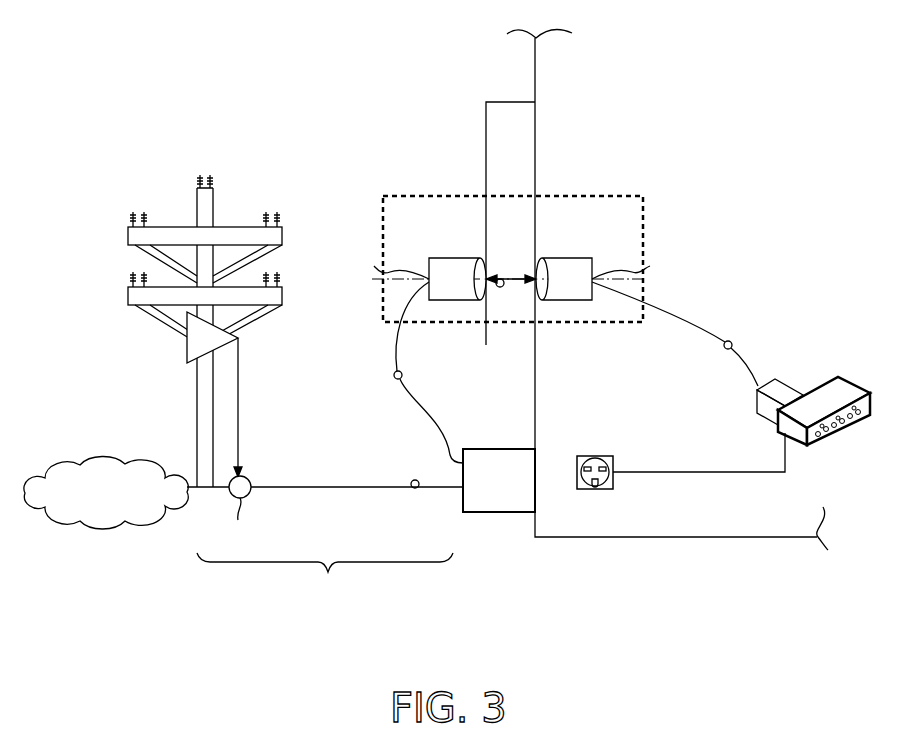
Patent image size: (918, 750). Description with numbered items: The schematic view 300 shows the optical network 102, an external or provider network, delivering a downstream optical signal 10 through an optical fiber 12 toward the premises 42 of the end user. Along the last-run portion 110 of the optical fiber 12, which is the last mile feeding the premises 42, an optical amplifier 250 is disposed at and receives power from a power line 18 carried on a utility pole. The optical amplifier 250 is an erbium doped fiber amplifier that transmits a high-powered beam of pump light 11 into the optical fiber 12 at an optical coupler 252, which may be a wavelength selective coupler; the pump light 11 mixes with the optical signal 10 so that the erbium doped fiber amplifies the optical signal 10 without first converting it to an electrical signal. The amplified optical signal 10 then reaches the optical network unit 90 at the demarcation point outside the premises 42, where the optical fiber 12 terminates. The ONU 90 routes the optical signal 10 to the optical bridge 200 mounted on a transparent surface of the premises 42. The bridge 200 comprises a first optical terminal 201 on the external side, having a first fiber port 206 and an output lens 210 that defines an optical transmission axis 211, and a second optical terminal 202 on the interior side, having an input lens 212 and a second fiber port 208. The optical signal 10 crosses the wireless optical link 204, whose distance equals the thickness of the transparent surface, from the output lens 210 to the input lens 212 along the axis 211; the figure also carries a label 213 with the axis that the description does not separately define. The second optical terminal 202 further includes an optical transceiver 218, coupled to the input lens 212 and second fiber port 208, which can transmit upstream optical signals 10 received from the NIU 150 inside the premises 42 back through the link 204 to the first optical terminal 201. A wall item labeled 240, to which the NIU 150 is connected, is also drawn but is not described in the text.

The schematic view 300 is at (661, 78).
The premises 42 is at (675, 145).
The power line 18 is at (232, 227).
The optical amplifier 250 is at (187, 340).
The pump light 11 is at (238, 382).
The optical network 102 is at (96, 460).
The optical coupler 252 is at (251, 490).
The optical fiber 12 is at (313, 486).
The last-run portion 110 is at (325, 577).
The optical signal 10 is at (394, 376).
The optical network unit 90 is at (509, 501).
The optical bridge 200 is at (417, 192).
The first optical terminal 201 is at (451, 254).
The output lens 210 is at (445, 257).
The second optical terminal 202 is at (569, 254).
The input lens 212 is at (565, 257).
The wireless optical link 204 is at (507, 277).
The first fiber port 206 is at (386, 266).
The second fiber port 208 is at (637, 267).
The optical transmission axis 211 is at (476, 295).
The alignment axis 213 is at (372, 280).
The optical transceiver 218 is at (788, 387).
The NIU 150 is at (815, 450).
The power outlet 240 is at (595, 456).